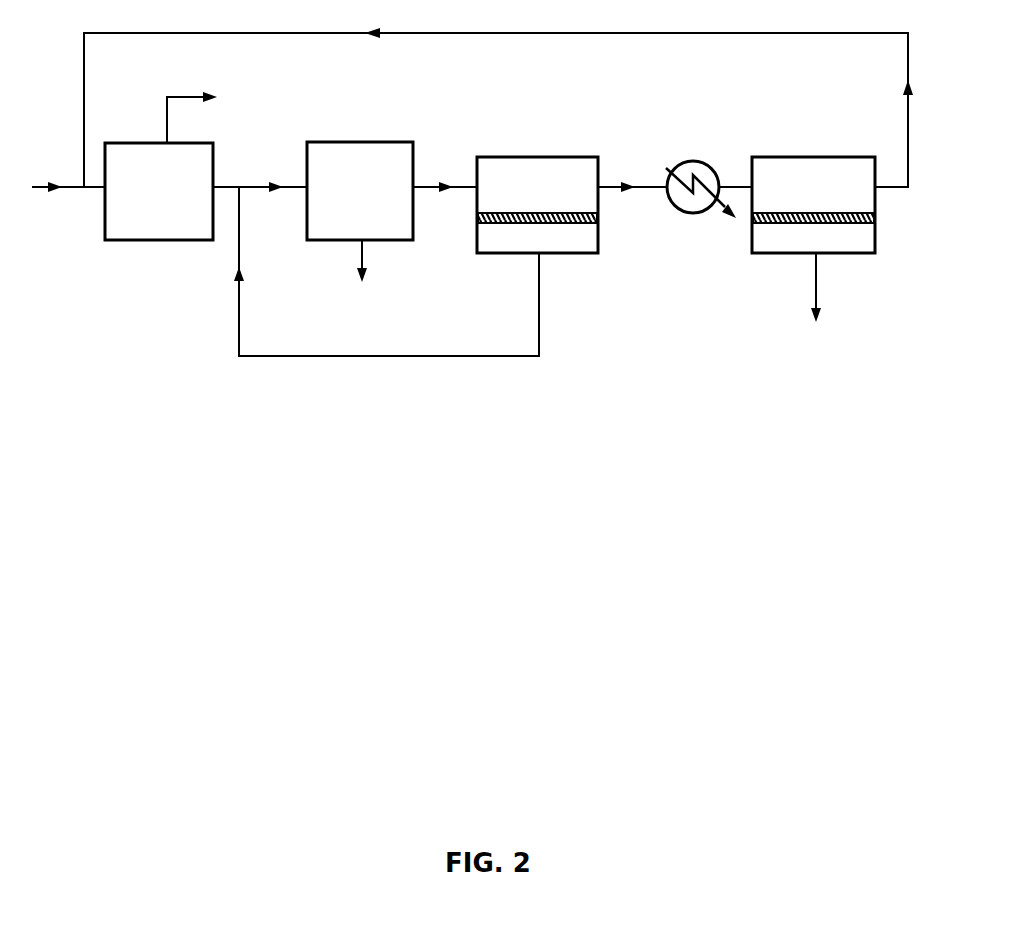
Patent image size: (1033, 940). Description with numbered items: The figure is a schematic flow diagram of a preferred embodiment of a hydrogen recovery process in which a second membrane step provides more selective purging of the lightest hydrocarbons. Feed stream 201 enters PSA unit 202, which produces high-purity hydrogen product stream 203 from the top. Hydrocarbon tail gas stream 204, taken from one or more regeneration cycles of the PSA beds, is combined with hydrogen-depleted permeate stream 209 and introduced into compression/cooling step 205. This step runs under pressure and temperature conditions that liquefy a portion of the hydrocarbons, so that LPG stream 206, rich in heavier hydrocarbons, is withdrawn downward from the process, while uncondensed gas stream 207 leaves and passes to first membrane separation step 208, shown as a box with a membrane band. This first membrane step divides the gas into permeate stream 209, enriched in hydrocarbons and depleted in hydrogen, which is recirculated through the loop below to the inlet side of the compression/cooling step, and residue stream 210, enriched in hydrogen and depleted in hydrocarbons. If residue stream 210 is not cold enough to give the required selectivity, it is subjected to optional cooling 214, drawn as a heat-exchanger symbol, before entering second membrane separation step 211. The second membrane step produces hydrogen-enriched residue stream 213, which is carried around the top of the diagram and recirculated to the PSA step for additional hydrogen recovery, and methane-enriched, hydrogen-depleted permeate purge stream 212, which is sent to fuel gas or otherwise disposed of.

The feed stream 201 is at (68, 202).
The PSA unit 202 is at (153, 240).
The high-purity hydrogen product stream 203 is at (213, 115).
The hydrocarbon tail gas stream 204 is at (260, 202).
The compression/cooling step 205 is at (413, 142).
The LPG stream 206 is at (366, 277).
The uncondensed gas stream 207 is at (445, 202).
The first membrane separation step 208 is at (503, 253).
The permeate stream 209 is at (386, 287).
The residue stream 210 is at (675, 201).
The second membrane separation step 211 is at (780, 253).
The permeate purge stream 212 is at (818, 305).
The hydrogen-enriched residue stream 213 is at (498, 97).
The optional cooling 214 is at (693, 161).